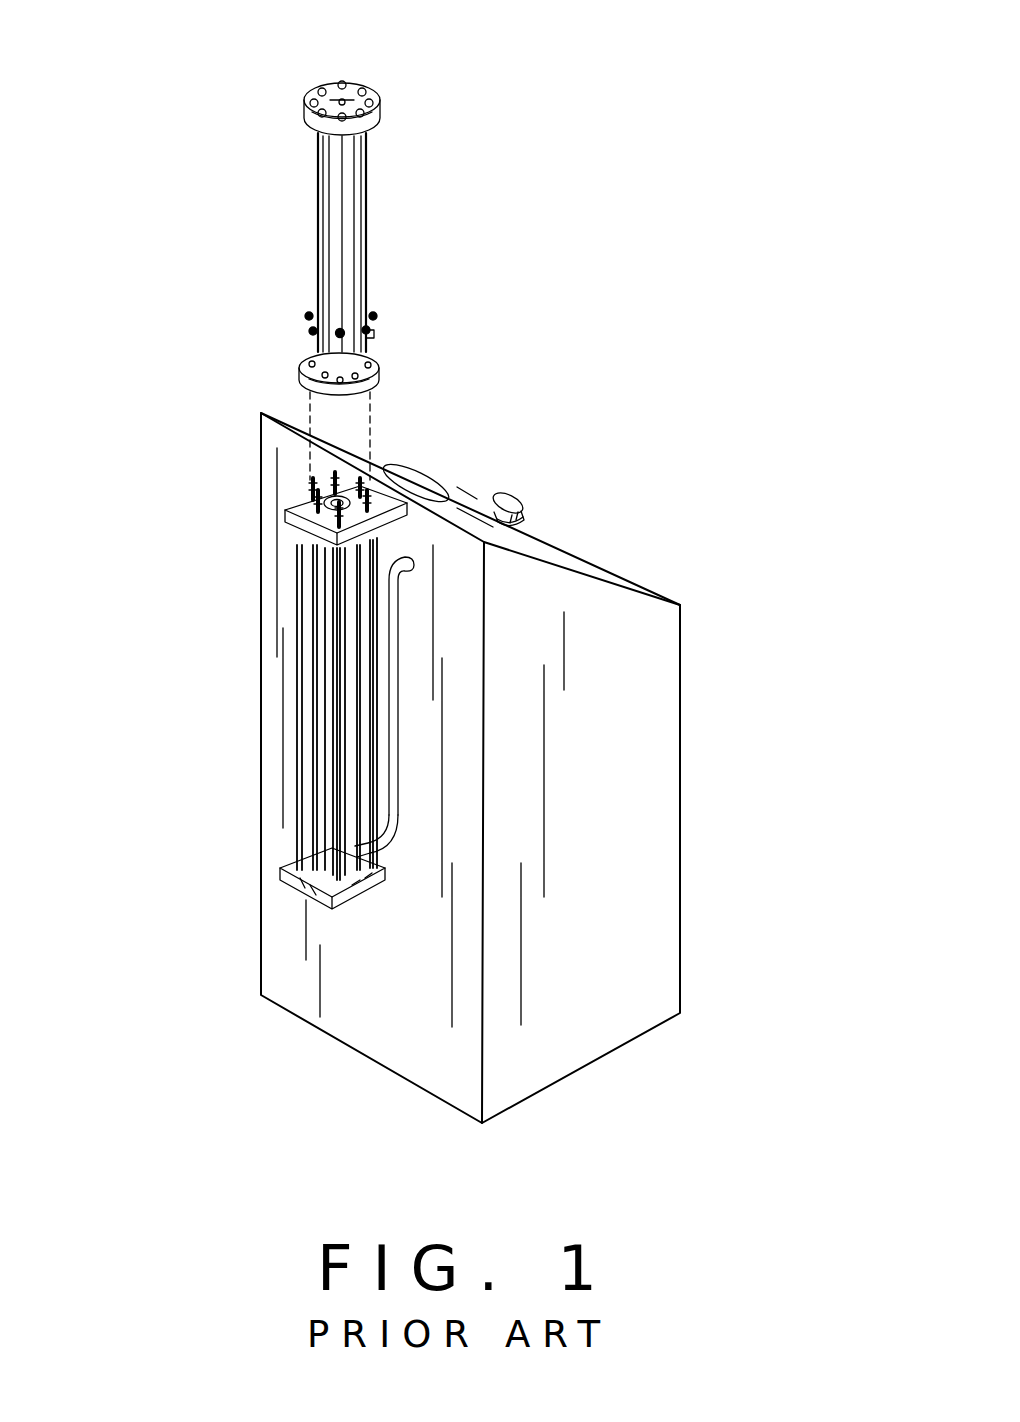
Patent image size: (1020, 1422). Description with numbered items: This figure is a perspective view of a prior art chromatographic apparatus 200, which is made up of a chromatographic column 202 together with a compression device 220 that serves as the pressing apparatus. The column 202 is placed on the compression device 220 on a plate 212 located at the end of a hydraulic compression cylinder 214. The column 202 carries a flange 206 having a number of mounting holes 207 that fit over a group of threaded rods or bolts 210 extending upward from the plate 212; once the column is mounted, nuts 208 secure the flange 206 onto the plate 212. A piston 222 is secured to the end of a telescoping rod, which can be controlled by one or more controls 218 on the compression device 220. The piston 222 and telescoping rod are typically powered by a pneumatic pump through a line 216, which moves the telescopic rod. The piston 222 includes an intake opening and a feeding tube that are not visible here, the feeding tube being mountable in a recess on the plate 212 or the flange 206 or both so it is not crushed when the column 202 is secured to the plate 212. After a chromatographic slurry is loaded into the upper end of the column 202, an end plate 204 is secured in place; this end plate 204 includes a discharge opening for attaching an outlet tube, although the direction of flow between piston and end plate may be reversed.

The chromatographic apparatus 200 is at (548, 345).
The chromatographic column 202 is at (368, 214).
The end plate 204 is at (342, 86).
The flange 206 is at (380, 380).
The mounting holes 207 is at (373, 335).
The nuts 208 is at (309, 315).
The threaded rods or bolts 210 is at (304, 494).
The plate 212 is at (295, 514).
The hydraulic compression cylinder 214 is at (320, 715).
The line 216 is at (395, 683).
The controls 218 is at (520, 507).
The compression device 220 is at (683, 720).
The piston 222 is at (350, 500).